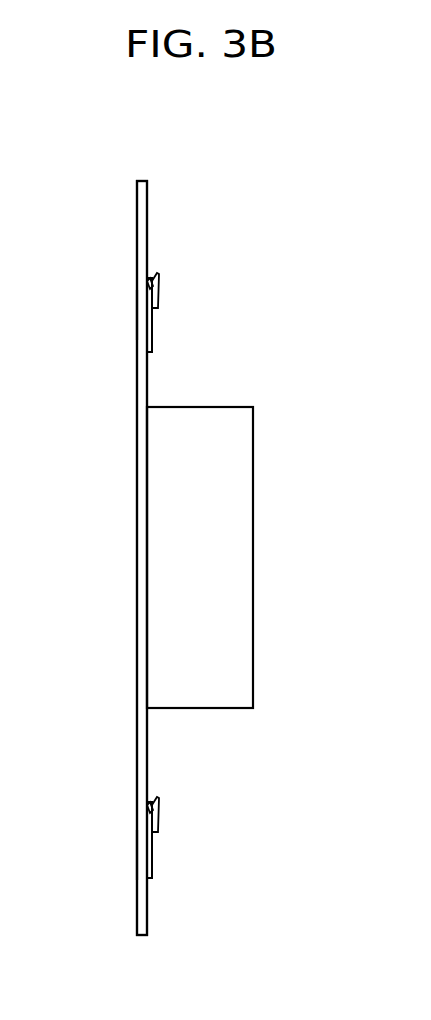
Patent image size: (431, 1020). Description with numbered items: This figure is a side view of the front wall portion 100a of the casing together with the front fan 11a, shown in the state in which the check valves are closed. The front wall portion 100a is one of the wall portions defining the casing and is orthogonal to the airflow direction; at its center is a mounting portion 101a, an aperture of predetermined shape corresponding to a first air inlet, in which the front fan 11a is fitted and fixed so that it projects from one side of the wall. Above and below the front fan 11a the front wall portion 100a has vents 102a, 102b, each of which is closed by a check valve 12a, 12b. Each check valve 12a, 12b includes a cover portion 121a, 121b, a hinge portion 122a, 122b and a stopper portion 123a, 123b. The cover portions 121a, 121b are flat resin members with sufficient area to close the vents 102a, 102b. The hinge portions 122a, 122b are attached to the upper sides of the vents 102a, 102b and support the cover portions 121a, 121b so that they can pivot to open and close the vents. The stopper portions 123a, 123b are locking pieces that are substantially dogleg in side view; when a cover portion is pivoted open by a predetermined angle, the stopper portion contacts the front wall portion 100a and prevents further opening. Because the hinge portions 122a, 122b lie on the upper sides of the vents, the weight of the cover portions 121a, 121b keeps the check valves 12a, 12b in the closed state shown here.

The front wall portion 100a is at (122, 152).
The mounting portion 101a is at (137, 568).
The vent 102a is at (137, 315).
The vent 102b is at (137, 852).
The front fan 11a is at (296, 537).
The check valve 12a is at (212, 265).
The check valve 12b is at (212, 872).
The cover portion 121a is at (150, 322).
The hinge portion 122a is at (153, 278).
The stopper portion 123a is at (158, 300).
The cover portion 121b is at (152, 848).
The hinge portion 122b is at (152, 803).
The stopper portion 123b is at (156, 830).